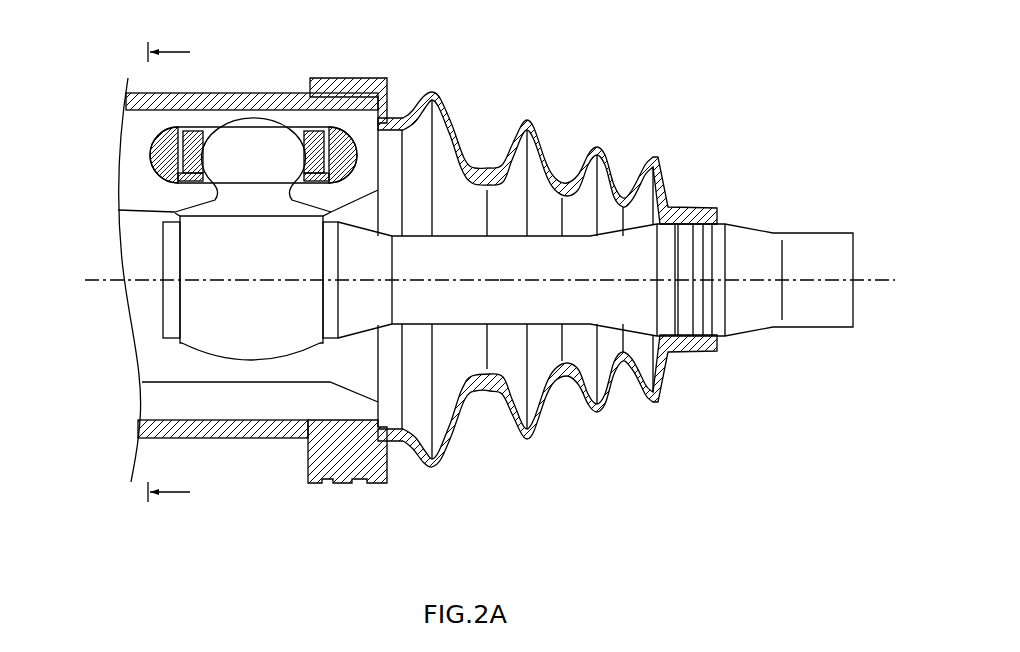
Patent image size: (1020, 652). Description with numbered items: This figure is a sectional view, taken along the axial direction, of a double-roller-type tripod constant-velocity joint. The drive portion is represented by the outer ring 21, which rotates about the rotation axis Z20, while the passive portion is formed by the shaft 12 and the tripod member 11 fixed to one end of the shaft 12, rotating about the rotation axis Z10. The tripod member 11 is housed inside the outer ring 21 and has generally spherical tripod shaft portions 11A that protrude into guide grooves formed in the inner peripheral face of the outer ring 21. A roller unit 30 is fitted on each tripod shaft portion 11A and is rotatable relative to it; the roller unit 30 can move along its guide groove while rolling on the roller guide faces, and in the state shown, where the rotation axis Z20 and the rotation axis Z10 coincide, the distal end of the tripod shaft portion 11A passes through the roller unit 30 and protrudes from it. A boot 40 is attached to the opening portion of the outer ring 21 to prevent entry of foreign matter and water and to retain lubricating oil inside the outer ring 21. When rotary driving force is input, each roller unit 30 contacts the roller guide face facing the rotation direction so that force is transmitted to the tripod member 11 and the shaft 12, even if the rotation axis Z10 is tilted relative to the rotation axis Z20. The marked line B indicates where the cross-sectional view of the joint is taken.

The outer ring 21 is at (270, 93).
The roller unit 30 is at (358, 168).
The tripod shaft portion 11A is at (273, 163).
The tripod member 11 is at (268, 303).
The shaft 12 is at (453, 302).
The boot 40 is at (562, 437).
The rotation axis of the drive portion Z20 is at (102, 283).
The rotation axis of the passive portion Z10 is at (878, 283).
The line B- B is at (178, 272).